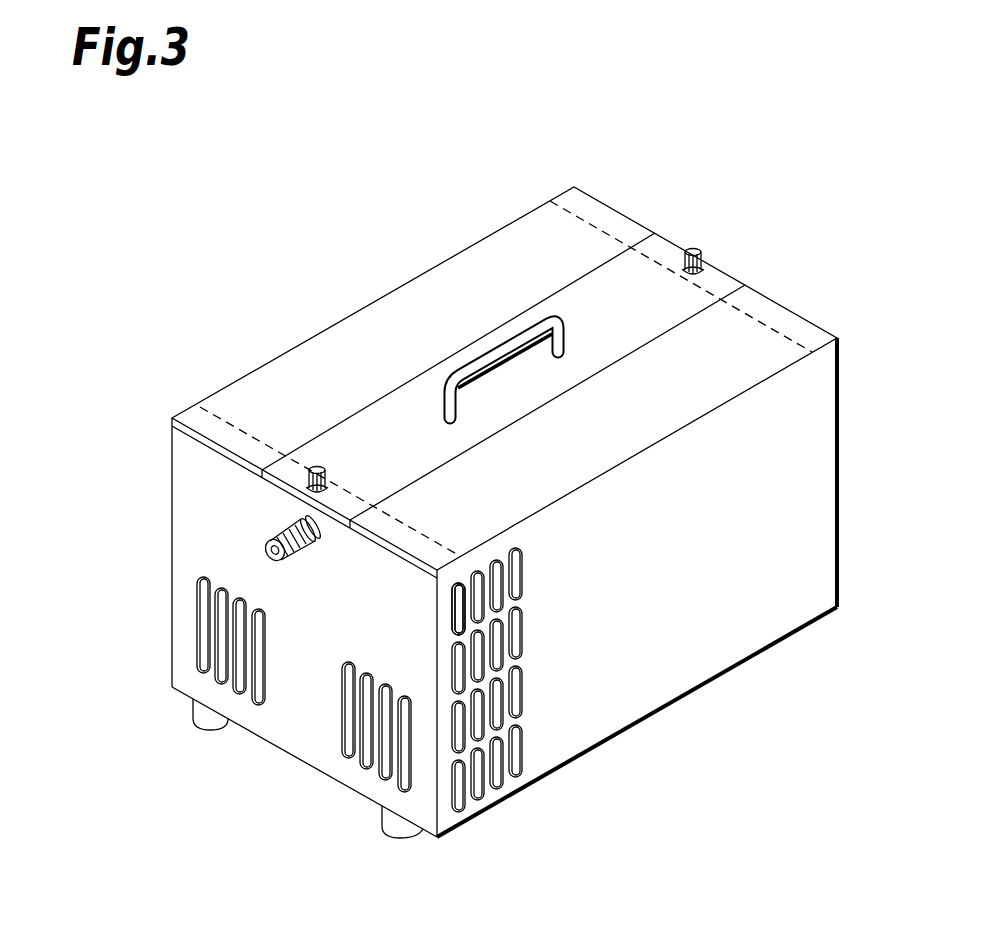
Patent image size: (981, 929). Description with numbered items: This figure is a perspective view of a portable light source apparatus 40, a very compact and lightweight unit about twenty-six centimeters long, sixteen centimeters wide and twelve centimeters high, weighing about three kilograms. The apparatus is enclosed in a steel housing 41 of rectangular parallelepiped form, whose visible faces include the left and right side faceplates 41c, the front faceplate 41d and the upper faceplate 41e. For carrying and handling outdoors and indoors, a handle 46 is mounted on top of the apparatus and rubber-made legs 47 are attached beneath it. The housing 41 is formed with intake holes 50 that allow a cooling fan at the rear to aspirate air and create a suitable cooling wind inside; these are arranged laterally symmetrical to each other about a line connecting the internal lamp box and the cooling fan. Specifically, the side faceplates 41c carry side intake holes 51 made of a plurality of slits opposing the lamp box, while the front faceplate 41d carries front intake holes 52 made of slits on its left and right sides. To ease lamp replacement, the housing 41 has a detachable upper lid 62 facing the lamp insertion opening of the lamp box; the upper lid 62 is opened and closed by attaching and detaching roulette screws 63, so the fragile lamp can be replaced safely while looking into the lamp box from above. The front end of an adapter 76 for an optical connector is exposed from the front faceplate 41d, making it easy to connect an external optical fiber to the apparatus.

The light source apparatus 40 is at (697, 140).
The housing 41 is at (840, 458).
The side faceplate 41c is at (690, 676).
The front faceplate 41d is at (287, 742).
The upper faceplate 41e is at (768, 344).
The handle 46 is at (500, 338).
The legs 47 is at (193, 712).
The intake holes 50 is at (458, 609).
The side intake holes 51 is at (517, 581).
The front intake holes 52 is at (203, 647).
The upper lid 62 is at (617, 280).
The roulette screws 63 is at (692, 248).
The adapter 76 is at (294, 553).